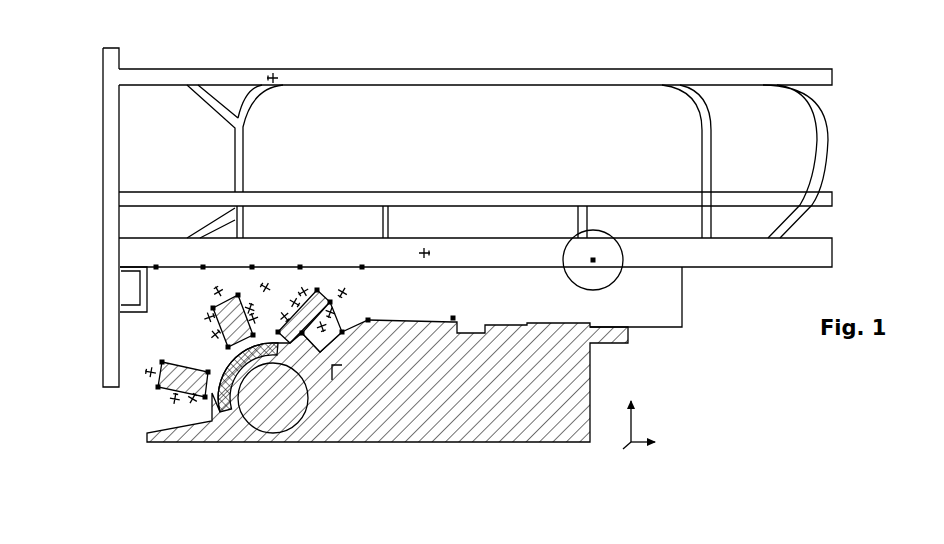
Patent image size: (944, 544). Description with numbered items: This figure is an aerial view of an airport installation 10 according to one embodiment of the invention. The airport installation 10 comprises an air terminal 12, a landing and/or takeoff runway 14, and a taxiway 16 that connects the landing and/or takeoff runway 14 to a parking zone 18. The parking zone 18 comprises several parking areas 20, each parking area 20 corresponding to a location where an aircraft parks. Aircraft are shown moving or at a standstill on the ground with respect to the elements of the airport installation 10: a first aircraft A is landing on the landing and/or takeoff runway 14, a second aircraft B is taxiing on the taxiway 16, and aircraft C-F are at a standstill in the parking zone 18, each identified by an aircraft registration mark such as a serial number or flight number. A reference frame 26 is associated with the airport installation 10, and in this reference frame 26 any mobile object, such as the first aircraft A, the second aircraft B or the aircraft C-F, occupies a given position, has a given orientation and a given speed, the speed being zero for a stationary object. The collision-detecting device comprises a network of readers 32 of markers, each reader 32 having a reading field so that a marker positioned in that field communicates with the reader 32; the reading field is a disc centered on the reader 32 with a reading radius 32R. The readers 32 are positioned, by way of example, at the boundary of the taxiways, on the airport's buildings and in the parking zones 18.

The airport installation 10 is at (234, 458).
The air terminal 12 is at (236, 415).
The landing and/or takeoff runway 14 is at (514, 192).
The taxiway 16 is at (554, 248).
The parking zone 18 is at (154, 401).
The parking area 20 is at (213, 338).
The reference frame 26 is at (622, 449).
The reader 32 is at (202, 266).
The reading radius 32R is at (628, 252).
The first aircraft A is at (278, 77).
The second aircraft B is at (426, 248).
The aircraft C to F C-F is at (300, 288).